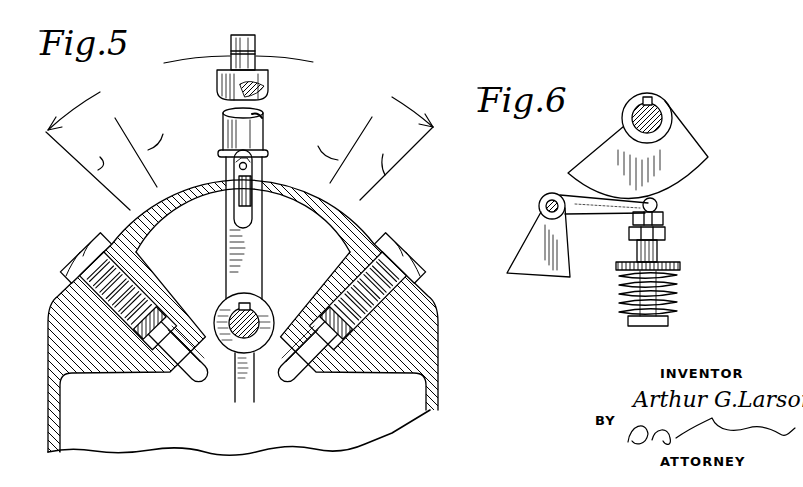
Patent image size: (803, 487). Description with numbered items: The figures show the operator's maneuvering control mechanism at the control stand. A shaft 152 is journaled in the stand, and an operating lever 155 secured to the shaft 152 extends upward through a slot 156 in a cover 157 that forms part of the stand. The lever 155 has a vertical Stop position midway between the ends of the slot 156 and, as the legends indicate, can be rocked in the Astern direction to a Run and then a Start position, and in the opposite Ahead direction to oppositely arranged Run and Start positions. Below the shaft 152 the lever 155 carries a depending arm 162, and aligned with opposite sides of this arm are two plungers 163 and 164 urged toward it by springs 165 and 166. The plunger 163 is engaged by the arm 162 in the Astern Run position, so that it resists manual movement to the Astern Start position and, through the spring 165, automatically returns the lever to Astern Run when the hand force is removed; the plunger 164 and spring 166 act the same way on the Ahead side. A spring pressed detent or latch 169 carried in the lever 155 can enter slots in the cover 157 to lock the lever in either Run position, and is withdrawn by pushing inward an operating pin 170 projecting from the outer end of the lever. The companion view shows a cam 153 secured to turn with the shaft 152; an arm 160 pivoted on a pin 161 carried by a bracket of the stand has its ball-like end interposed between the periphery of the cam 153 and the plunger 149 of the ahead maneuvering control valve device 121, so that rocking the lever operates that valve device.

In FIG. 5, the operating pin 170 is at (252, 36).
In FIG. 5, the cover 157 is at (205, 184).
In FIG. 5, the slot 156 is at (347, 224).
In FIG. 5, the spring pressed detent or latch 169 is at (240, 192).
In FIG. 5, the operating lever 155 is at (262, 236).
In FIG. 5, the shaft 152 is at (256, 320).
In FIG. 6, the shaft 152 is at (656, 112).
In FIG. 5, the depending arm 162 is at (241, 398).
In FIG. 5, the spring 165 is at (128, 337).
In FIG. 5, the plunger 163 is at (194, 376).
In FIG. 5, the plunger 164 is at (286, 377).
In FIG. 5, the spring 166 is at (353, 330).
In FIG. 6, the cam 153 is at (690, 133).
In FIG. 6, the pin 161 is at (547, 205).
In FIG. 6, the arm 160 is at (590, 215).
In FIG. 6, the plunger 149 is at (665, 218).
In FIG. 6, the ahead maneuvering control valve device 121 is at (676, 296).